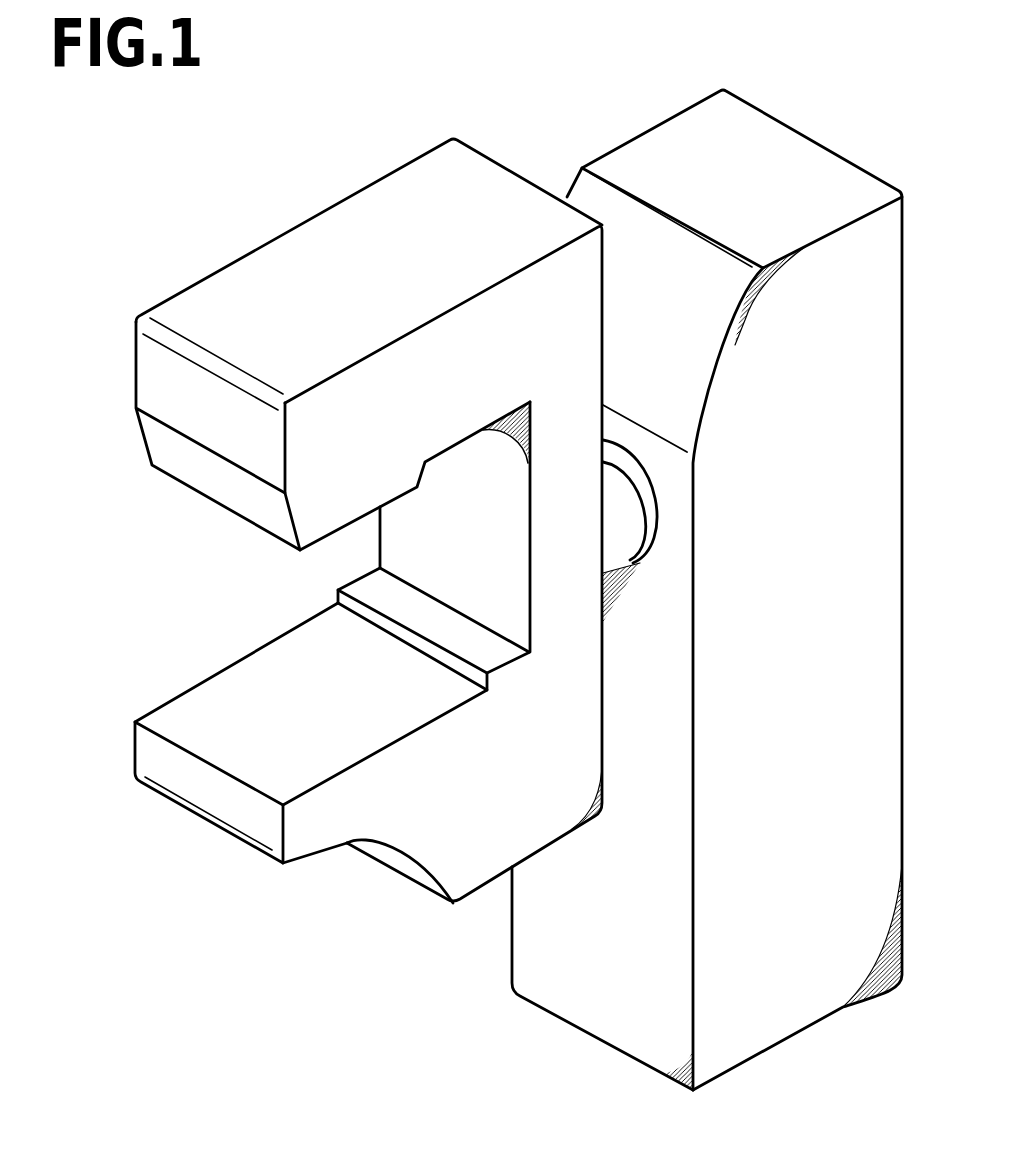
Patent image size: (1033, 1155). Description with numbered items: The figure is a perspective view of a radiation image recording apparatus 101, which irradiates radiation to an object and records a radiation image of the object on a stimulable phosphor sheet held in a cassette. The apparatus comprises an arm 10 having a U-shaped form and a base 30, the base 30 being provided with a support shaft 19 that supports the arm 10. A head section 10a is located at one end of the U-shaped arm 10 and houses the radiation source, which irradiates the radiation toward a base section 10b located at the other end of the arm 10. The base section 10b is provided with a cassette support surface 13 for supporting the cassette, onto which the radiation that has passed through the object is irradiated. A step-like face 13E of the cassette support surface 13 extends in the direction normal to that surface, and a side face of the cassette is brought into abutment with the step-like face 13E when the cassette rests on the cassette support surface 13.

The radiation image recording apparatus 101 is at (737, 69).
The arm 10 is at (453, 138).
The head section 10a is at (150, 372).
The base section 10b is at (510, 848).
The cassette support surface 13 is at (178, 715).
The step-like face 13E is at (373, 620).
The support shaft 19 is at (623, 538).
The base 30 is at (828, 143).